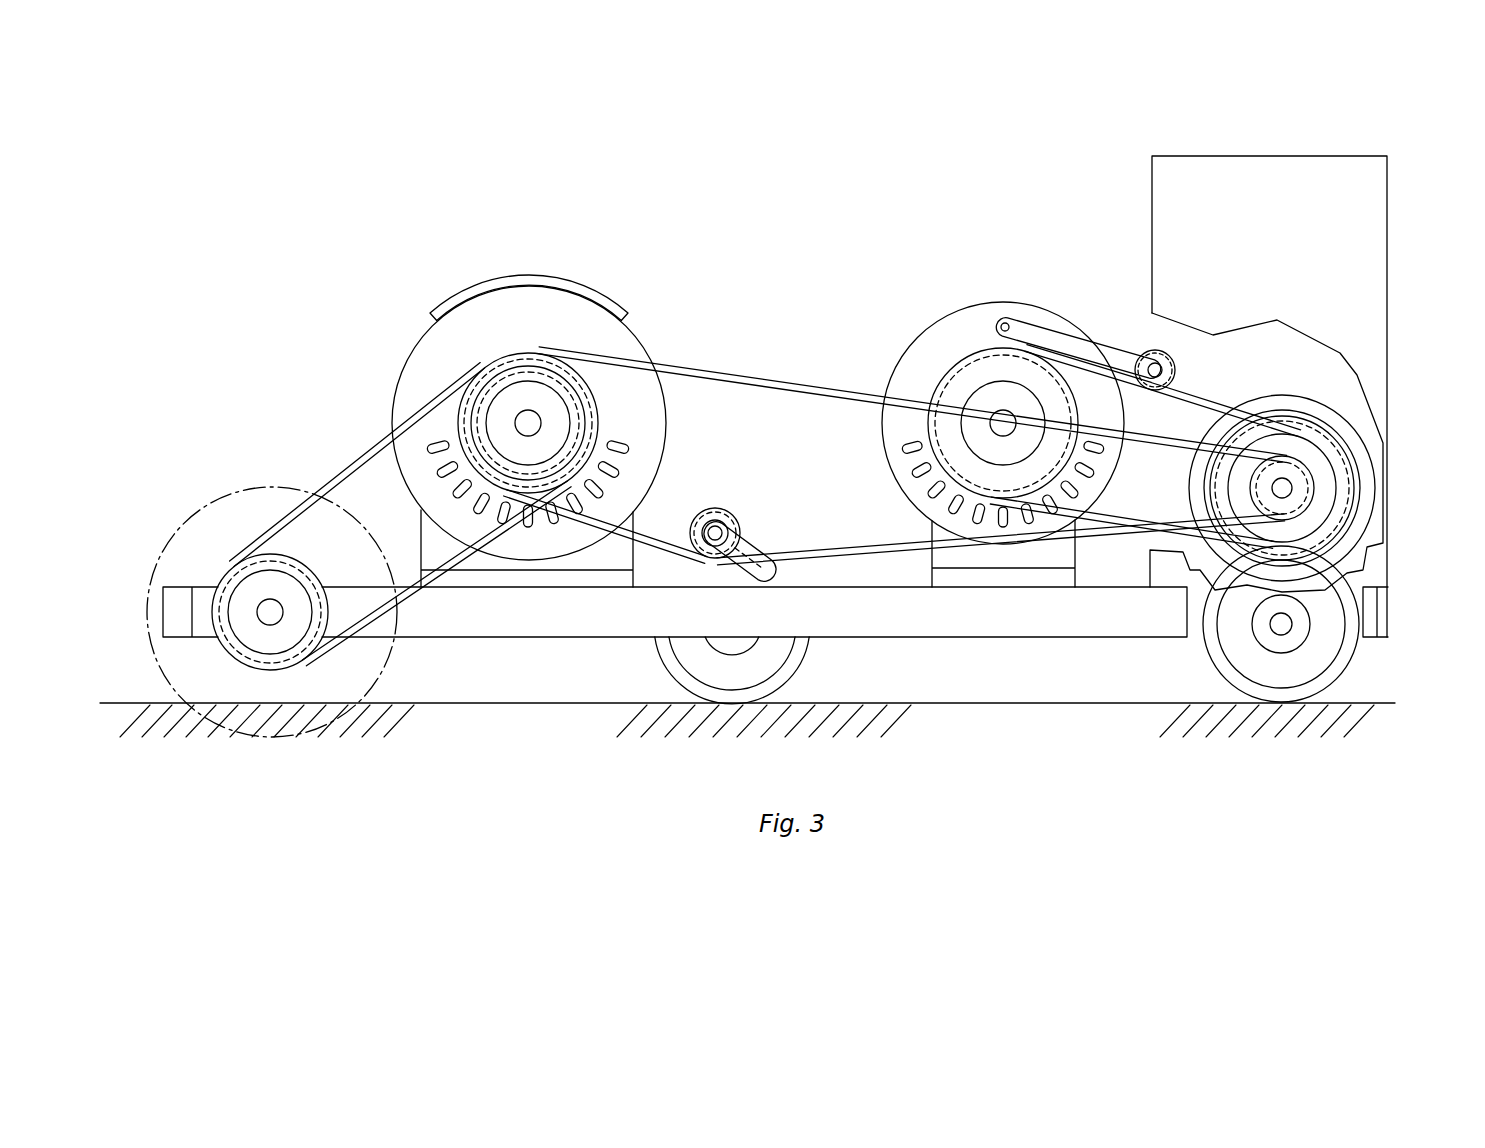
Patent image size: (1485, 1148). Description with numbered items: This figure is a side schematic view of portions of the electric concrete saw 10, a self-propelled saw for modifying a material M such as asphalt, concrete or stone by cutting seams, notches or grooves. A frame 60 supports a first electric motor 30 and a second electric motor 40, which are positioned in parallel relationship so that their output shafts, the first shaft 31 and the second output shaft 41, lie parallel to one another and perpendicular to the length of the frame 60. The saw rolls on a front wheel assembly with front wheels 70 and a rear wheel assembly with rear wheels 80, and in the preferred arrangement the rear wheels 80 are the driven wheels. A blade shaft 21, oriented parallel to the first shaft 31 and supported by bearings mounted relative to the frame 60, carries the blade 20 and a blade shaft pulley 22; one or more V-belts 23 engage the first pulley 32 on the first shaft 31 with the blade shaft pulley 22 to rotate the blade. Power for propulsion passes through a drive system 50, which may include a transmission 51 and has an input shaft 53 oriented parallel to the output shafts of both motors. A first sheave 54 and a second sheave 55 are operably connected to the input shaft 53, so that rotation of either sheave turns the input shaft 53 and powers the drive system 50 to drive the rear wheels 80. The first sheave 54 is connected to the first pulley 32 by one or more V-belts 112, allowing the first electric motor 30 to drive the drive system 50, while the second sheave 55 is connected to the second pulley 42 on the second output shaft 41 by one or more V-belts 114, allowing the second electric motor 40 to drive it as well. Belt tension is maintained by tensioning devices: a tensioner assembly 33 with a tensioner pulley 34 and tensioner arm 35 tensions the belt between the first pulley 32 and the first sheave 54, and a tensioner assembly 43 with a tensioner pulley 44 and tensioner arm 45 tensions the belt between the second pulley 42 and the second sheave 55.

The electric concrete saw 10 is at (258, 228).
The blade 20 is at (334, 550).
The blade shaft 21 is at (259, 606).
The blade shaft pulley 22 is at (232, 657).
The V-belts 23 is at (355, 475).
The first electric motor 30 is at (540, 408).
The first shaft 31 is at (541, 423).
The first pulley 32 is at (533, 347).
The tensioner assembly 33 is at (771, 510).
The tensioner pulley 34 is at (713, 508).
The tensioner arm 35 is at (756, 550).
The second electric motor 40 is at (971, 433).
The second output shaft 41 is at (1005, 420).
The second pulley 42 is at (942, 376).
The tensioner assembly 43 is at (1091, 294).
The tensioner pulley 44 is at (1170, 352).
The tensioner arm 45 is at (1025, 330).
The drive system 50 is at (1313, 425).
The transmission 51 is at (1263, 394).
The input shaft 53 is at (1284, 486).
The first sheave 54 is at (1305, 500).
The second sheave 55 is at (1333, 437).
The frame 60 is at (545, 612).
The front wheels 70 is at (697, 660).
The rear wheels 80 is at (1247, 653).
The V-belts 112 is at (700, 372).
The V-belts 114 is at (1186, 398).
The material M is at (922, 700).